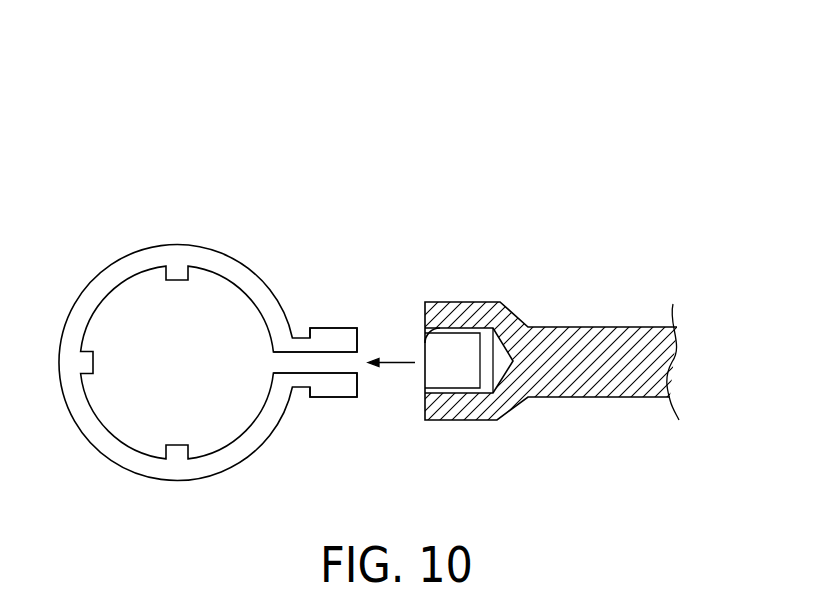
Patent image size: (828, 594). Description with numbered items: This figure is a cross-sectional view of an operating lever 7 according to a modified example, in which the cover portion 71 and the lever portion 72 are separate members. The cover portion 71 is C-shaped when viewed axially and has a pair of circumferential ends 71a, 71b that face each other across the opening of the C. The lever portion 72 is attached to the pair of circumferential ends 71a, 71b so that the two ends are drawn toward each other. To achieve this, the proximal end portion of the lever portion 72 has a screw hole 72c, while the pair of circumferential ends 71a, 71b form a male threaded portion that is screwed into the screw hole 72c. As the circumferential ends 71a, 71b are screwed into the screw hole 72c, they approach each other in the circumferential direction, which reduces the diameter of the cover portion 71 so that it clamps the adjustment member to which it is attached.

The operating lever 7 is at (423, 116).
The cover portion 71 is at (178, 245).
The circumferential end 71a is at (343, 327).
The circumferential end 71b is at (333, 398).
The lever portion 72 is at (606, 327).
The screw hole 72c is at (425, 343).